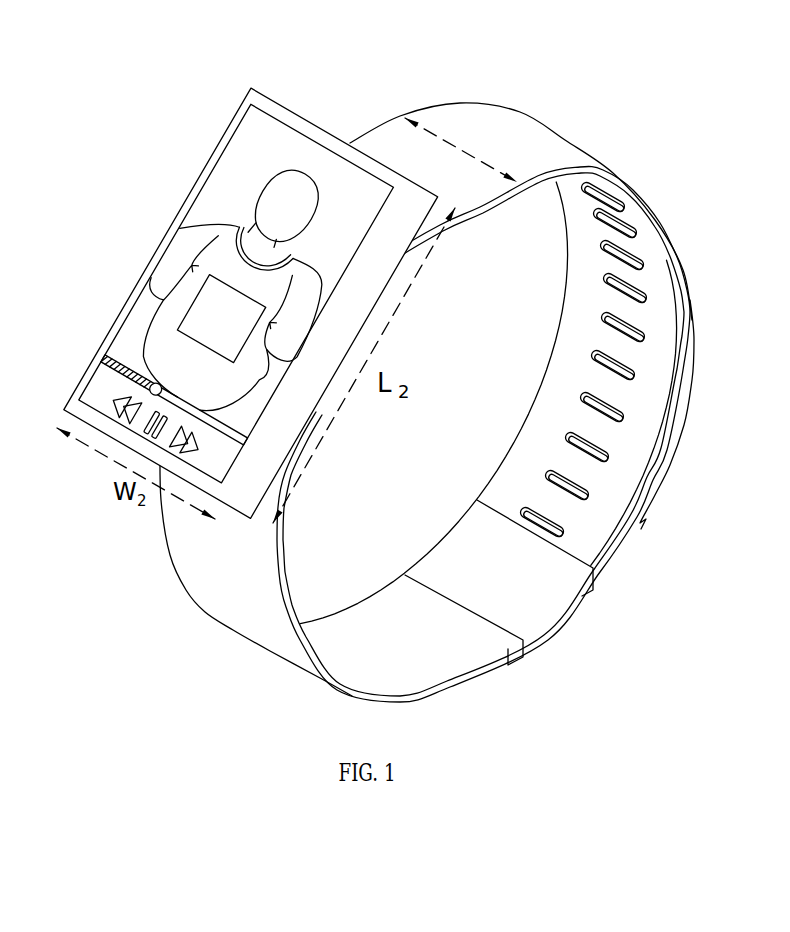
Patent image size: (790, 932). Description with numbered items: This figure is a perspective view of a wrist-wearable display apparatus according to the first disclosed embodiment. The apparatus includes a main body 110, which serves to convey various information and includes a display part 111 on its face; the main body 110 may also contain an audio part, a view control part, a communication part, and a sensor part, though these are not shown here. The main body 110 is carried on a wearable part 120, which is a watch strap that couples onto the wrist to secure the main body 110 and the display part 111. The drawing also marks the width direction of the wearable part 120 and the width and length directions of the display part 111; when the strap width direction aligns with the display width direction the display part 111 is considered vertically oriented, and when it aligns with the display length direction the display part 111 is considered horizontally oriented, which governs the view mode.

The main body 110 is at (207, 120).
The display part 111 is at (237, 294).
The wearable part 120 is at (566, 128).